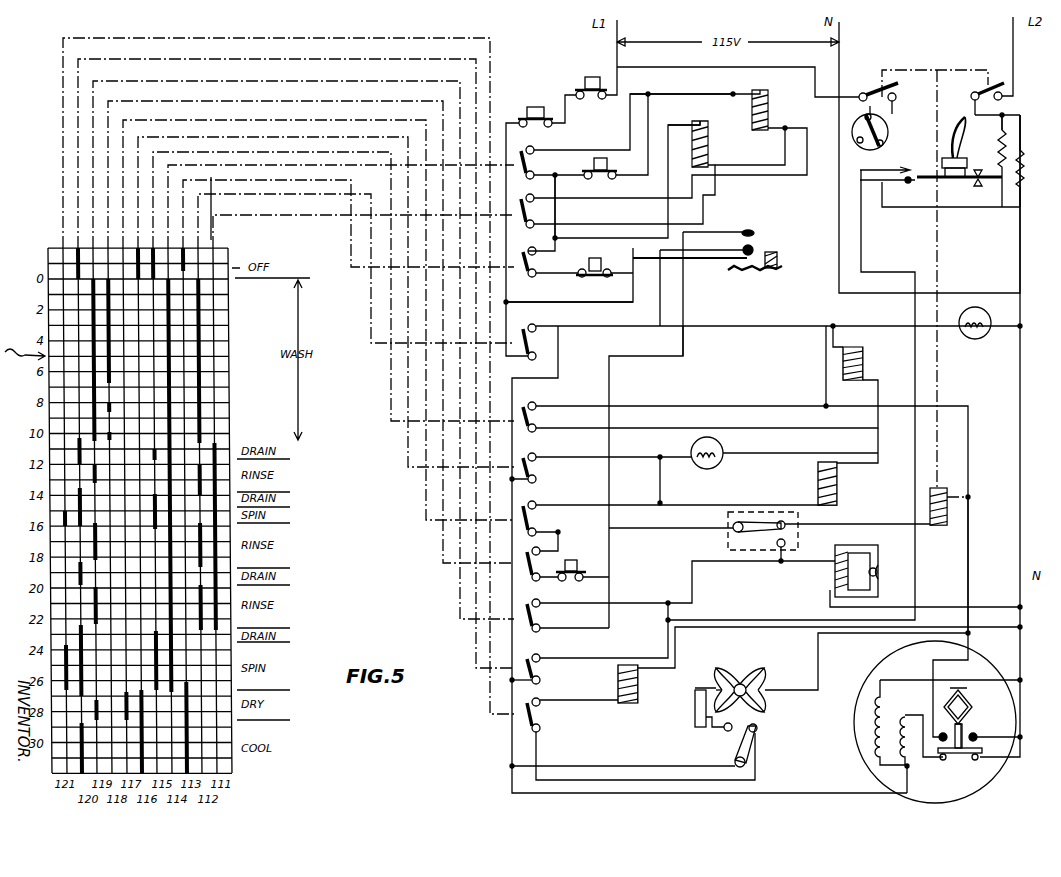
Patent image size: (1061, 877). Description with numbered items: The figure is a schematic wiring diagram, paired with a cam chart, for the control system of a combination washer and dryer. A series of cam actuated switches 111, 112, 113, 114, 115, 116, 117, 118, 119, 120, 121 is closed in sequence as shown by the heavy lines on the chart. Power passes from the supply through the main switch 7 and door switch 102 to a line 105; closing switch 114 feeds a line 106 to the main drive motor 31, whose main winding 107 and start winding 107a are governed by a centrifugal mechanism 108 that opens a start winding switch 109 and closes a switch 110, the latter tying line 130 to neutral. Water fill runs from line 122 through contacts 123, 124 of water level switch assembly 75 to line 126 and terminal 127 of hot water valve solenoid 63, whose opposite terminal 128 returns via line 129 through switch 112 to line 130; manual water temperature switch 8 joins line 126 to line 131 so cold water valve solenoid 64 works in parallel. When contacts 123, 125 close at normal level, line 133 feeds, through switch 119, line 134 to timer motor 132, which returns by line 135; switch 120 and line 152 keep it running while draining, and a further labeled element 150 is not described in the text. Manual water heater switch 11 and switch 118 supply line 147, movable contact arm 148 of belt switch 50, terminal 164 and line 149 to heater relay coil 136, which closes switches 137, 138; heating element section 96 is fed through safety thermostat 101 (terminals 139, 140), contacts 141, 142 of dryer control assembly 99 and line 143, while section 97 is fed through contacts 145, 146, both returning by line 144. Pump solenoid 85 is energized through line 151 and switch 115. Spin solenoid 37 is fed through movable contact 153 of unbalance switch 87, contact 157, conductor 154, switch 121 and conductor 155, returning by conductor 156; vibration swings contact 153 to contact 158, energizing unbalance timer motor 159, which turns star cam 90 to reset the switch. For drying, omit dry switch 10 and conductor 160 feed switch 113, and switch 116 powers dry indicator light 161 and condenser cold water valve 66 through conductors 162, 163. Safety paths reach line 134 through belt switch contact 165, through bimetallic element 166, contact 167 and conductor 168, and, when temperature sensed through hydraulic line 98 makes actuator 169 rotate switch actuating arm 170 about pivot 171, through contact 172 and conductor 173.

The main switch 7 is at (596, 100).
The manual water temperature switch 8 is at (606, 180).
The omit dry switch 10 is at (598, 280).
The manual water heater switch 11 is at (570, 582).
The main drive motor 31 is at (1018, 772).
The spin solenoid 37 is at (638, 682).
The belt switch 50 is at (745, 550).
The hot water valve solenoid 63 is at (708, 142).
The cold water valve solenoid 64 is at (768, 100).
The condenser cold water valve 66 is at (818, 478).
The water level switch assembly 75 is at (777, 270).
The pump clutch solenoid 85 is at (863, 355).
The unbalance switch 87 is at (718, 737).
The star cam 90 is at (764, 672).
The heating element section 96 is at (1030, 168).
The heating element section 97 is at (994, 138).
The hydraulic line 98 is at (964, 112).
The dryer control assembly 99 is at (980, 208).
The safety thermostat 101 is at (888, 132).
The door switch 102 is at (535, 128).
The line 105 is at (511, 306).
The line 106 is at (727, 791).
The main or run winding 107 is at (876, 733).
The start winding 107a is at (912, 768).
The centrifugal mechanism 108 is at (972, 702).
The start winding switch 109 is at (955, 757).
The centrifugal switch contacts 110 is at (978, 733).
The cam actuated switch 111 is at (542, 162).
The cam actuated switch 112 is at (542, 211).
The cam actuated switch 113 is at (544, 262).
The cam actuated switch 114 is at (544, 342).
The cam actuated switch 115 is at (544, 417).
The cam actuated switch 116 is at (544, 468).
The cam actuated switch 117 is at (544, 518).
The cam actuated switch 118 is at (548, 564).
The cam actuated switch 119 is at (548, 615).
The cam actuated switch 120 is at (548, 669).
The cam actuated switch 121 is at (548, 715).
The line 122 is at (660, 322).
The contact 123 is at (755, 246).
The contact 124 is at (745, 275).
The contact 125 is at (750, 228).
The line 126 is at (558, 180).
The terminal 127 is at (695, 118).
The terminal 128 is at (730, 158).
The line 129 is at (590, 202).
The line 130 is at (833, 646).
The line 131 is at (733, 94).
The timer motor 132 is at (878, 552).
The line 133 is at (690, 345).
The line 134 is at (645, 598).
The line 135 is at (999, 606).
The heater relay coil 136 is at (947, 510).
The heater relay switch 137 is at (868, 88).
The heater relay switch 138 is at (995, 86).
The terminal 139 is at (878, 117).
The terminal 140 is at (884, 143).
The contact 141 is at (935, 160).
The contact 142 is at (905, 188).
The line 143 is at (893, 208).
The line 144 is at (1010, 113).
The contact 145 is at (978, 168).
The contact 146 is at (978, 188).
The line 147 is at (672, 527).
The movable contact arm 148 is at (748, 527).
The line 149 is at (873, 522).
The timer motor 150 is at (978, 339).
The line 151 is at (760, 432).
The line 152 is at (640, 648).
The movable contact 153 is at (752, 750).
The conductor 154 is at (640, 778).
The conductor 155 is at (585, 705).
The conductor 156 is at (1000, 630).
The contact 157 is at (758, 726).
The contact 158 is at (693, 712).
The unbalance timer motor 159 is at (716, 684).
The conductor 160 is at (545, 278).
The dry indicator light 161 is at (723, 445).
The conductor 162 is at (650, 448).
The conductor 163 is at (735, 502).
The terminal 164 is at (786, 522).
The contact 165 is at (786, 543).
The bimetallic element 166 is at (855, 109).
The contact 167 is at (856, 143).
The conductor 168 is at (880, 268).
The temperature responsive actuator 169 is at (952, 135).
The switch actuating arm 170 is at (958, 206).
The pivot point 171 is at (924, 198).
The switch contact 172 is at (895, 165).
The conductor 173 is at (858, 181).